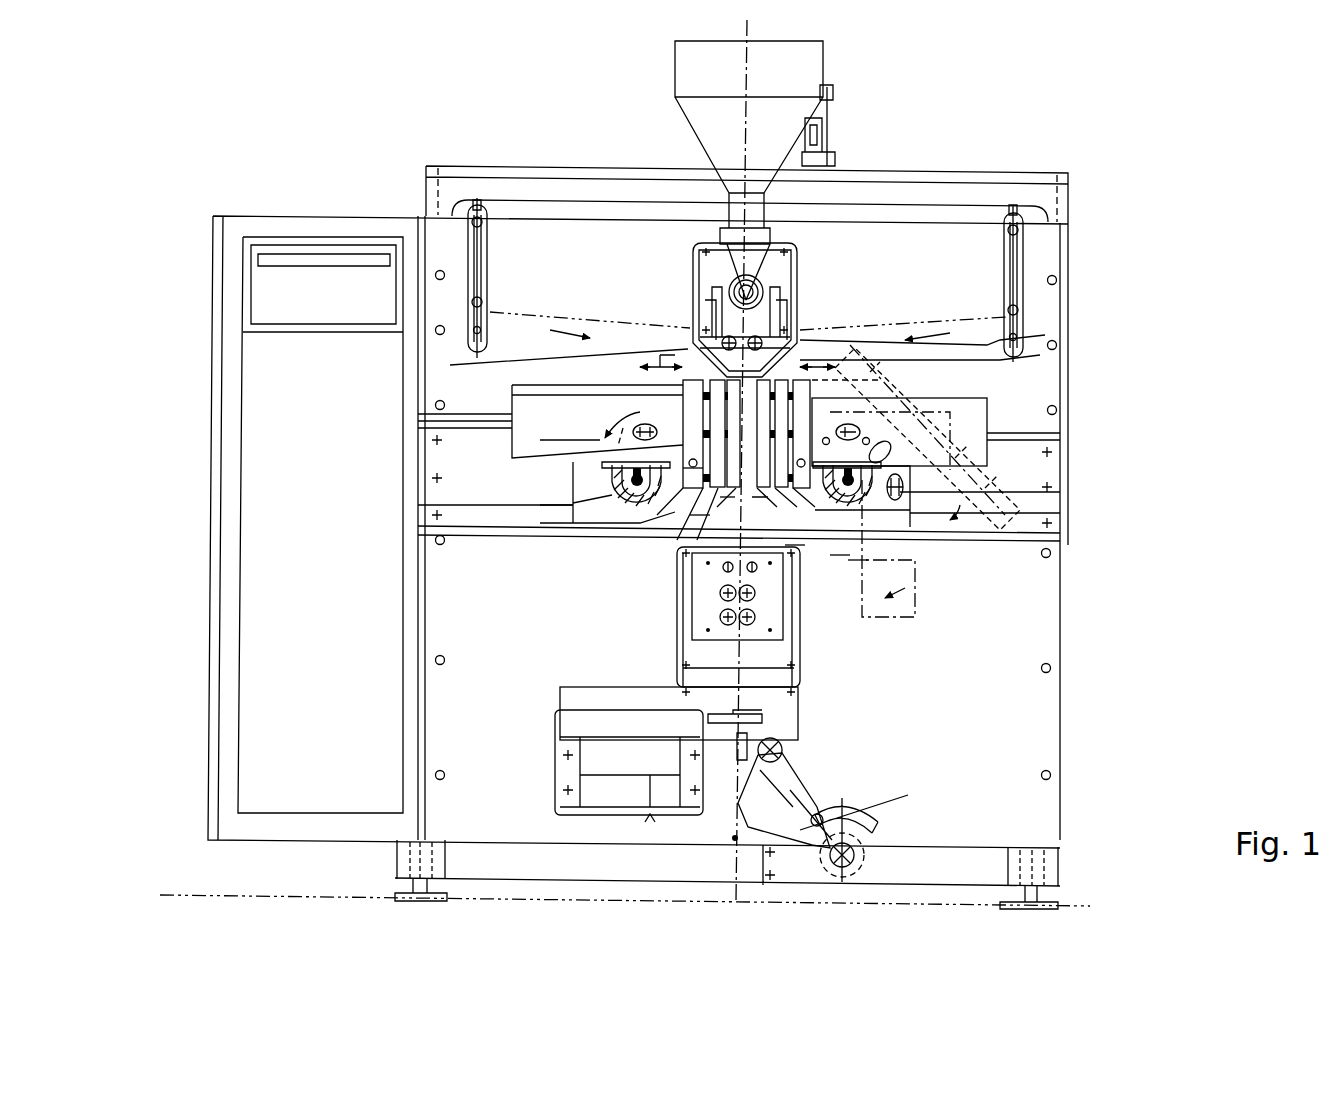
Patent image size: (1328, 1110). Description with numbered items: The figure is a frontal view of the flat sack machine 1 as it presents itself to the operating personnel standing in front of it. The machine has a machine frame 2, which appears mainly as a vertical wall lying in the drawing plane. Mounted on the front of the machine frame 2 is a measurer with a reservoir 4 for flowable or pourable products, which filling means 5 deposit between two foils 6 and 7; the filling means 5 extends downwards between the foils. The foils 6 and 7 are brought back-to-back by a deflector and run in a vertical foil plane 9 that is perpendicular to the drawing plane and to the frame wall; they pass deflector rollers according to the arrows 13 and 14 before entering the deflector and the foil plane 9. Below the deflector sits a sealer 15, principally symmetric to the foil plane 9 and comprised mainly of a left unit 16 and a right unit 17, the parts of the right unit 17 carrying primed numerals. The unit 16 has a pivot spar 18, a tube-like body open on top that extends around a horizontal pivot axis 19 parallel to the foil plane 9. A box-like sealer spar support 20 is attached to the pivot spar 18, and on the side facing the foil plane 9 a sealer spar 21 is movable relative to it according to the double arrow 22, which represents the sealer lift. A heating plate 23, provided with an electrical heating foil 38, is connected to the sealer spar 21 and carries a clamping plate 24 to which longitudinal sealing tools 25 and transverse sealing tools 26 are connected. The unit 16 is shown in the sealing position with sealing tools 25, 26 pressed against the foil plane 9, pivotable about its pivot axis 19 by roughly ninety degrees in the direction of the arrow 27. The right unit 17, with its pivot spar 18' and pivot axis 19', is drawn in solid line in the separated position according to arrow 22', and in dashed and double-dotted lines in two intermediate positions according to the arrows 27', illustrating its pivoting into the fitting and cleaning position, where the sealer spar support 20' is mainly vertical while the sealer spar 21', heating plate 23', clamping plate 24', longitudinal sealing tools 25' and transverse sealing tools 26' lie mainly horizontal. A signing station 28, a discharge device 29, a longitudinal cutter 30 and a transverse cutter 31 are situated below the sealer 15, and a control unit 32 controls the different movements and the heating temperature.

The flat sack machine 1 is at (1112, 160).
The machine frame 2 is at (1050, 245).
The reservoir 4 is at (703, 127).
The filling means 5 is at (723, 317).
The foil 6 is at (568, 318).
The foil 7 is at (913, 322).
The foil plane 9 is at (750, 135).
The arrow 13 is at (548, 332).
The arrow 14 is at (907, 338).
The sealer 15 is at (1013, 338).
The unit 16 is at (738, 433).
The unit 17 is at (1000, 425).
The pivot spar 18 is at (393, 484).
The pivot spar 18' is at (993, 485).
The pivot axis 19 is at (426, 501).
The pivot axis 19' is at (993, 522).
The sealer spar support 20 is at (400, 419).
The sealer spar support 20' is at (993, 434).
The sealer spar 21 is at (358, 352).
The sealer spar 21' is at (1002, 549).
The double arrow 22 is at (314, 313).
The arrow 22' is at (1004, 428).
The heating plate 23 is at (413, 544).
The heating plate 23' is at (1017, 606).
The clamping plate 24 is at (426, 557).
The clamping plate 24' is at (1008, 622).
The longitudinal sealing tools 25 is at (410, 444).
The longitudinal sealing tools 25' is at (993, 377).
The transverse sealing tools 26 is at (466, 572).
The transverse sealing tools 26' is at (985, 636).
The arrow 27 is at (380, 416).
The arrows 27' is at (1016, 634).
The signing station 28 is at (770, 570).
The discharge device 29 is at (770, 593).
The longitudinal cutter 30 is at (770, 617).
The transverse cutter 31 is at (775, 712).
The control unit 32 is at (280, 735).
The electrical heating foil 38 is at (827, 330).